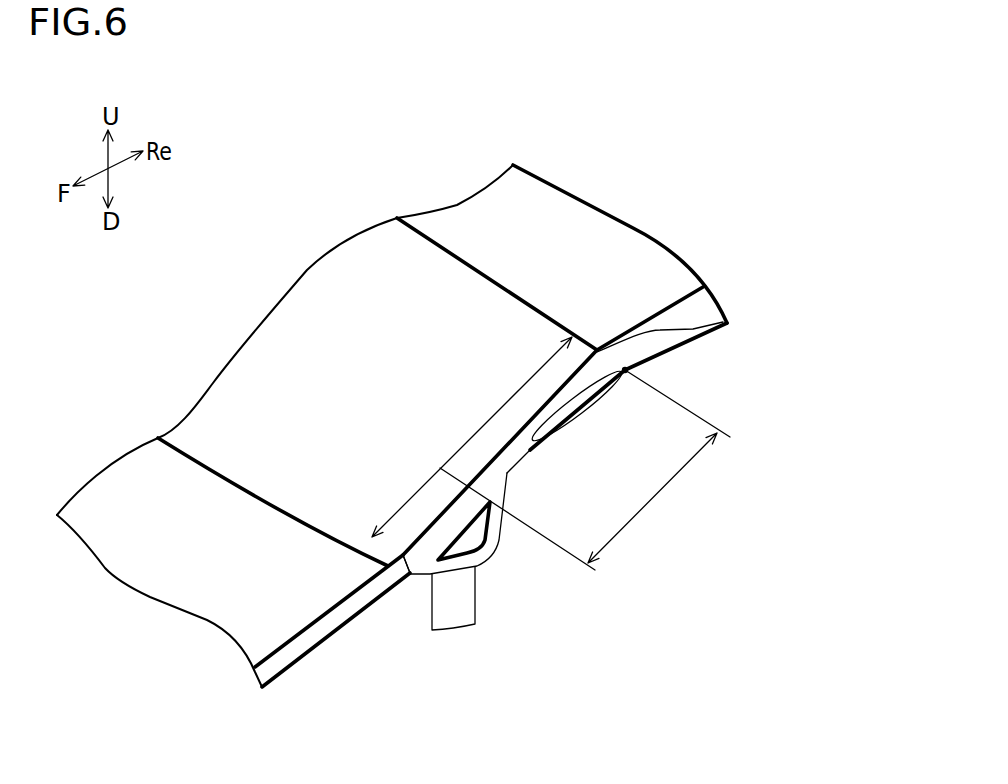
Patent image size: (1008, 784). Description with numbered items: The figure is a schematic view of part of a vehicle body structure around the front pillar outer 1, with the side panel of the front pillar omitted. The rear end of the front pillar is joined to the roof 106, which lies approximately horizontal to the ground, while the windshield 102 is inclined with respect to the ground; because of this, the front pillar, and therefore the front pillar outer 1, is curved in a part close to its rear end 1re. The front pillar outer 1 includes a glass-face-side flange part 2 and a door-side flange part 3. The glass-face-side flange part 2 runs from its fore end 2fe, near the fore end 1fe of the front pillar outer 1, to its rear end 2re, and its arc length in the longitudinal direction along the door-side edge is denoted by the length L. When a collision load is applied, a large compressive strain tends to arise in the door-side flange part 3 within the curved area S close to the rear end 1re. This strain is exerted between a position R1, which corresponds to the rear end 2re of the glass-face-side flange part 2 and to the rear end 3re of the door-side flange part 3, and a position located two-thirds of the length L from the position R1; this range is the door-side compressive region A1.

The front pillar outer 1 is at (560, 597).
The glass-face-side flange part 2 is at (453, 503).
The door-side flange part 3 is at (528, 448).
The windshield 102 is at (278, 342).
The roof 106 is at (625, 260).
The fore end of the front pillar outer 1fe is at (403, 560).
The fore end of the glass-face-side flange part 2fe is at (406, 564).
The rear end of the front pillar outer 1re is at (727, 322).
The rear end of the glass-face-side flange part 2re is at (650, 318).
The rear end of the door-side flange part 3re is at (676, 346).
The position corresponding to the rear end of the glass-face-side flange part R1 is at (628, 370).
The curved area S is at (590, 412).
The length of the glass-face-side flange part L is at (472, 437).
The door-side compressive region A1 is at (601, 470).